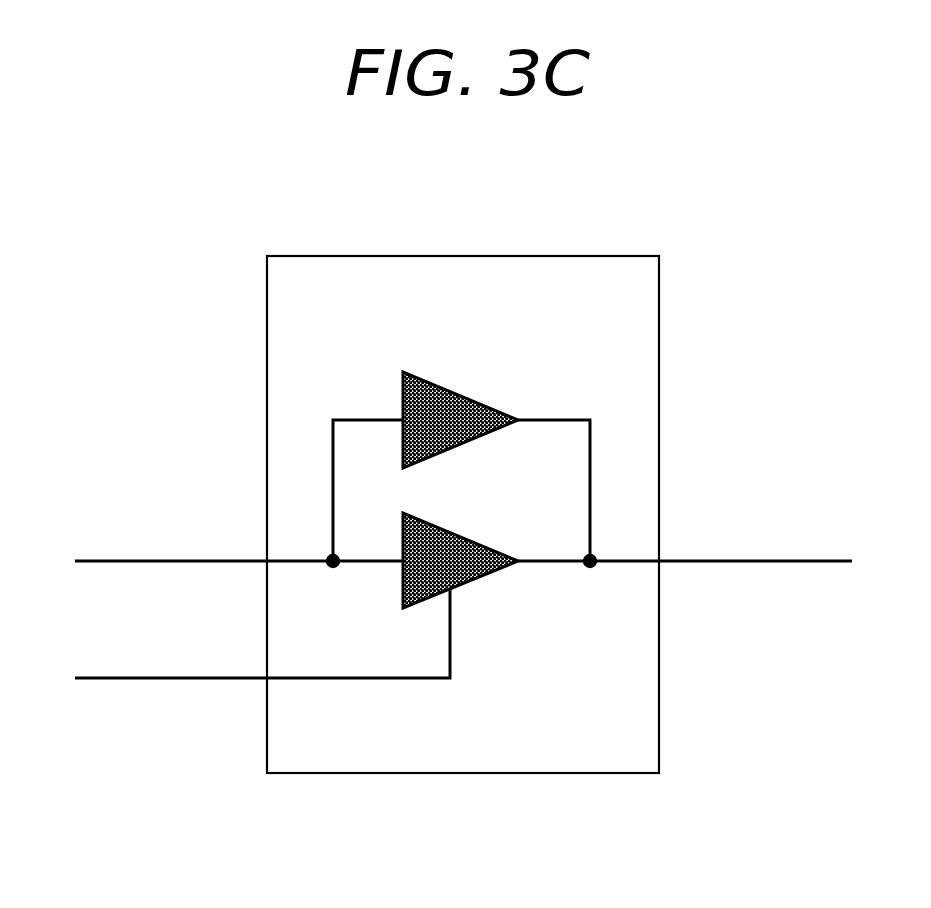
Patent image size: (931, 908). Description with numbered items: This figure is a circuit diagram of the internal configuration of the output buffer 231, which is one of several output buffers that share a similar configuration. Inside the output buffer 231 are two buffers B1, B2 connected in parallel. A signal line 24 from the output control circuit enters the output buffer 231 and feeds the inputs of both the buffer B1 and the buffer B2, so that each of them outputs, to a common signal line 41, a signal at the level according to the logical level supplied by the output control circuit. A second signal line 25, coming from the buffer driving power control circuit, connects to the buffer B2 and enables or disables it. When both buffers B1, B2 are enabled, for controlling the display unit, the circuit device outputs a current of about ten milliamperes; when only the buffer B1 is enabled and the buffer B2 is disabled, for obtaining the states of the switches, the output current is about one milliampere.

The output buffer 231 is at (298, 200).
The buffer B1 is at (468, 395).
The buffer B2 is at (475, 583).
The signal line 24 is at (128, 560).
The signal line 41 is at (792, 559).
The signal line 25 is at (123, 680).